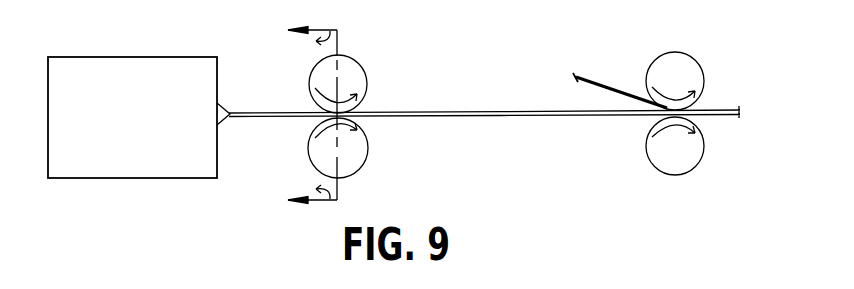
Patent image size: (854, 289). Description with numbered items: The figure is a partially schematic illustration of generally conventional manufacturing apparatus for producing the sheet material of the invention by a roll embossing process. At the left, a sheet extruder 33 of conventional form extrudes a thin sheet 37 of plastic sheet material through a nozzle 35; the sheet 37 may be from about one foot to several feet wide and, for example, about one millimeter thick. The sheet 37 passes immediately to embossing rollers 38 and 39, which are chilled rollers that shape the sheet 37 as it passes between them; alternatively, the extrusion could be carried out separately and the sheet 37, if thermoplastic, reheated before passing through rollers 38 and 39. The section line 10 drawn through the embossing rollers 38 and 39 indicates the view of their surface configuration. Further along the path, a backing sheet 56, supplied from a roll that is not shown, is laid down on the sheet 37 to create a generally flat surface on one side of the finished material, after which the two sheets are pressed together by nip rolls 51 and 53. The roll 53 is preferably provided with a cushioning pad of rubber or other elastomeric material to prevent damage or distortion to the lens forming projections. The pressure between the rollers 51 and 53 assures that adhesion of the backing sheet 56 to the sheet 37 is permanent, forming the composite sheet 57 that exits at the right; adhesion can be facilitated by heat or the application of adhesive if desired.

The section line 10- 10 is at (294, 116).
The sheet extruder 33 is at (108, 57).
The nozzle 35 is at (218, 108).
The sheet 37 is at (248, 118).
The embossing roller 38 is at (353, 57).
The embossing roller 39 is at (368, 141).
The nip roll 51 is at (685, 52).
The nip roll 53 is at (703, 137).
The backing sheet 56 is at (616, 88).
The composite sheet 57 is at (707, 106).